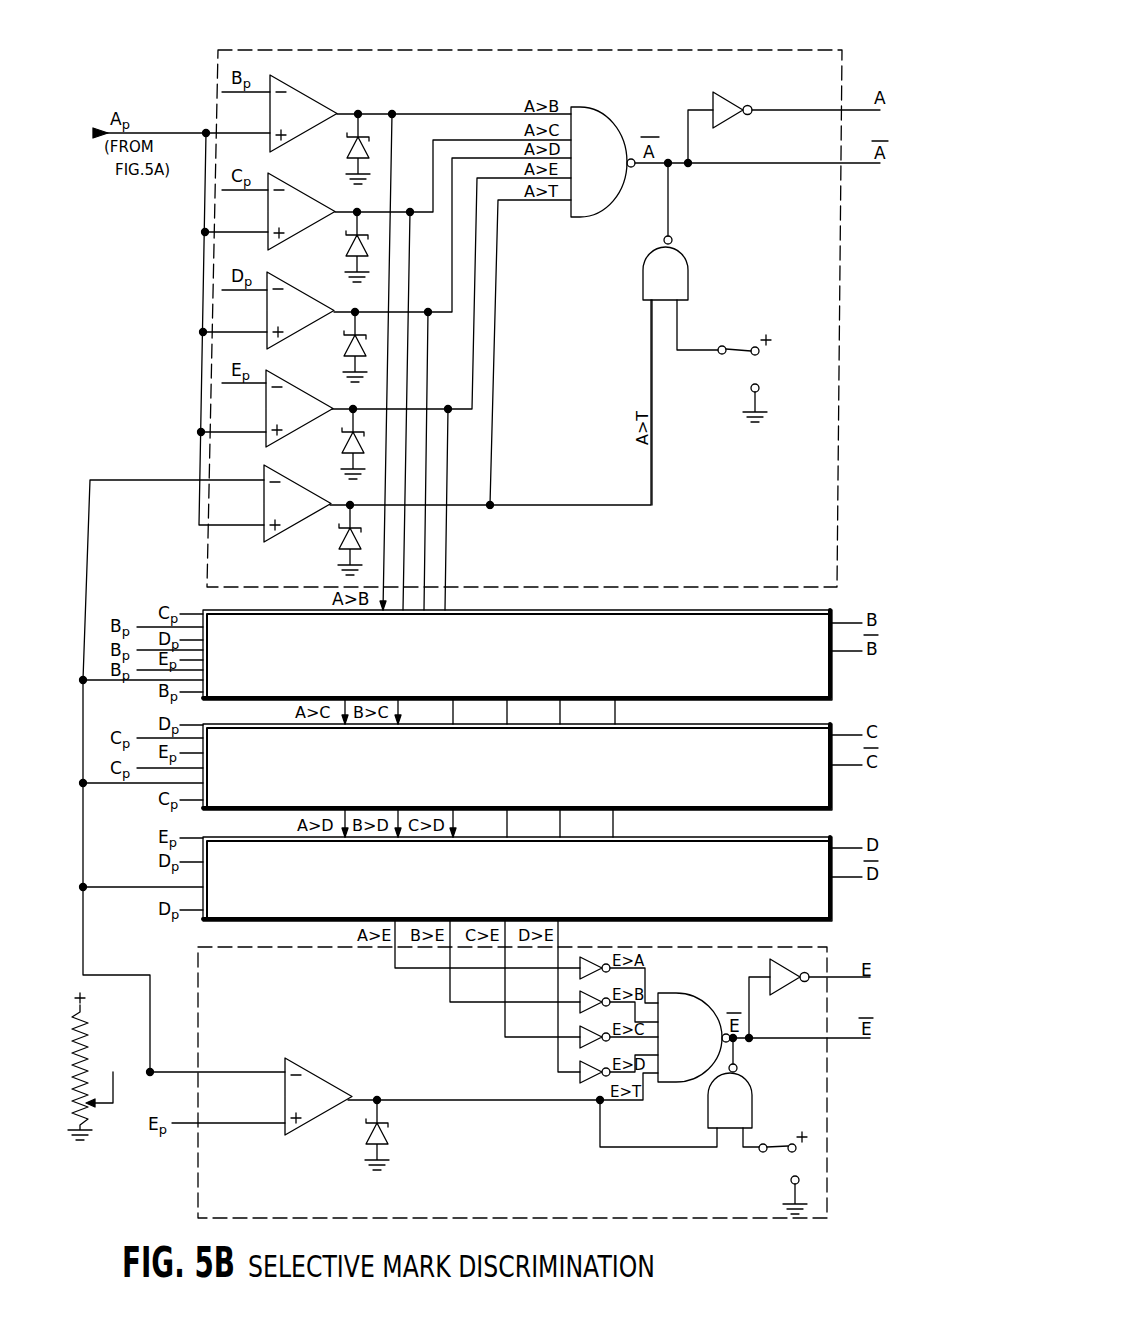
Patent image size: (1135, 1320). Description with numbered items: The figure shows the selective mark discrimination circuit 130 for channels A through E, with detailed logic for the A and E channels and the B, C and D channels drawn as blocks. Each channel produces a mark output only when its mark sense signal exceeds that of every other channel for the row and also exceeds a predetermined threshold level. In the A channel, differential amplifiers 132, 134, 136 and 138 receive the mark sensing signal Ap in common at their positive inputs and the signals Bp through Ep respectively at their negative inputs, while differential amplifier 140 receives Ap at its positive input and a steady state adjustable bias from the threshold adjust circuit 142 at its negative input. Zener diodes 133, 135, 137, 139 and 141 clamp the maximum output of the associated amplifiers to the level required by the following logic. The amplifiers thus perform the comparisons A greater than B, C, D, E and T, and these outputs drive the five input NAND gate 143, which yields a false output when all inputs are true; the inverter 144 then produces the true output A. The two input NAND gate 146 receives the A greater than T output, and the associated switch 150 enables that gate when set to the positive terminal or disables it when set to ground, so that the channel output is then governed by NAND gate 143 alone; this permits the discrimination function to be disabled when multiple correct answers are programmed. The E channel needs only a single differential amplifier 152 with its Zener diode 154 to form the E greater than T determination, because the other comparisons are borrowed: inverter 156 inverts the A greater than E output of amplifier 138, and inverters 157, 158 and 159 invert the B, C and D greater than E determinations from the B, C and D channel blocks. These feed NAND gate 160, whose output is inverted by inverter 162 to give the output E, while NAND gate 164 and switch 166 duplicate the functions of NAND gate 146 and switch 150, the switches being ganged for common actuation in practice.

The selective mark discrimination circuit 130 is at (706, 1279).
The differential amplifier 132 is at (311, 74).
The Zener diode 133 is at (347, 152).
The differential amplifier 134 is at (309, 173).
The Zener diode 135 is at (346, 250).
The differential amplifier 136 is at (306, 271).
The Zener diode 137 is at (344, 350).
The differential amplifier 138 is at (306, 369).
The Zener diode 139 is at (342, 447).
The differential amplifier 140 is at (303, 463).
The Zener diode 141 is at (339, 543).
The threshold adjust circuit 142 is at (125, 1056).
The NAND gate 143 is at (599, 90).
The inverter 144 is at (733, 72).
The NAND gate 146 is at (690, 232).
The switch 150 is at (720, 354).
The differential amplifier 152 is at (323, 1059).
The Zener diode 154 is at (386, 1127).
The inverter 156 is at (578, 966).
The inverter 157 is at (578, 1000).
The inverter 158 is at (578, 1035).
The inverter 159 is at (578, 1070).
The NAND gate 160 is at (702, 980).
The inverter 162 is at (793, 986).
The NAND gate 164 is at (763, 1075).
The switch 166 is at (760, 1151).